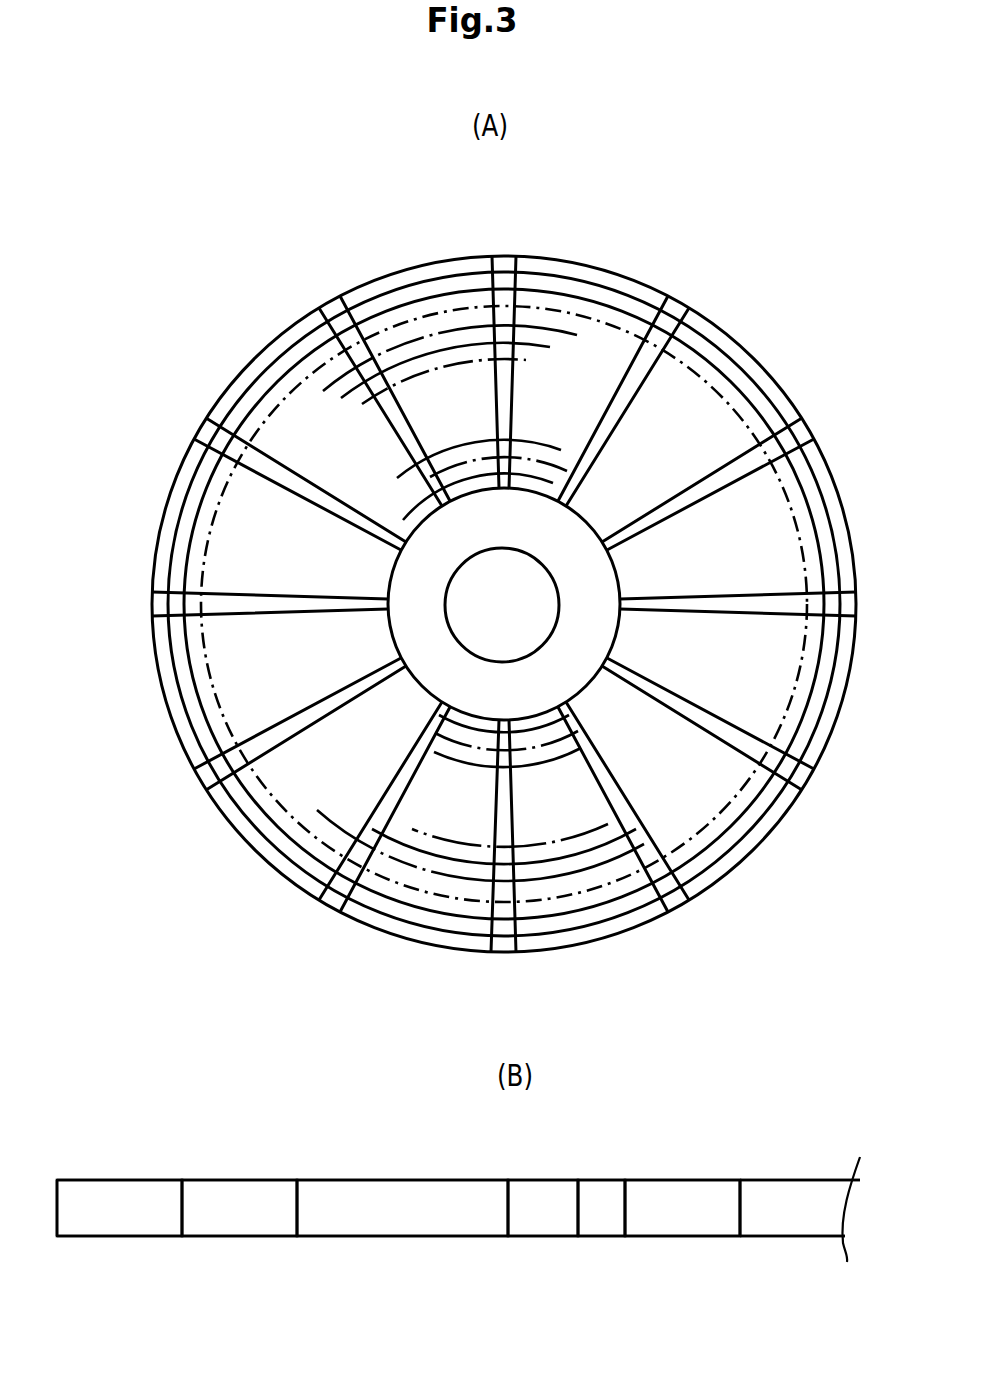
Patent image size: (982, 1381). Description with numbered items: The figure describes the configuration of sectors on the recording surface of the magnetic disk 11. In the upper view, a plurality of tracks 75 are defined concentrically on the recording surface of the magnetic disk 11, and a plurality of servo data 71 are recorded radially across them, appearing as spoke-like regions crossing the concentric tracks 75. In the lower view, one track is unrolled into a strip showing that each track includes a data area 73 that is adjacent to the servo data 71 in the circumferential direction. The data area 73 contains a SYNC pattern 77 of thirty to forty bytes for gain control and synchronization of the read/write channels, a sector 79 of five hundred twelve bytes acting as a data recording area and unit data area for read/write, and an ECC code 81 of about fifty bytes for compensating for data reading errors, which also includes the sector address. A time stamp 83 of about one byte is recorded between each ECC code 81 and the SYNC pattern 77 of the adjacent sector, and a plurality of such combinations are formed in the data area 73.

The magnetic disk 11 is at (188, 848).
The servo data 71 is at (204, 439).
The data area 73 is at (331, 282).
The tracks 75 is at (732, 852).
The SYNC pattern 77 is at (225, 1180).
The sector 79 is at (405, 1180).
The ECC code 81 is at (540, 1180).
The time stamp 83 is at (598, 1180).